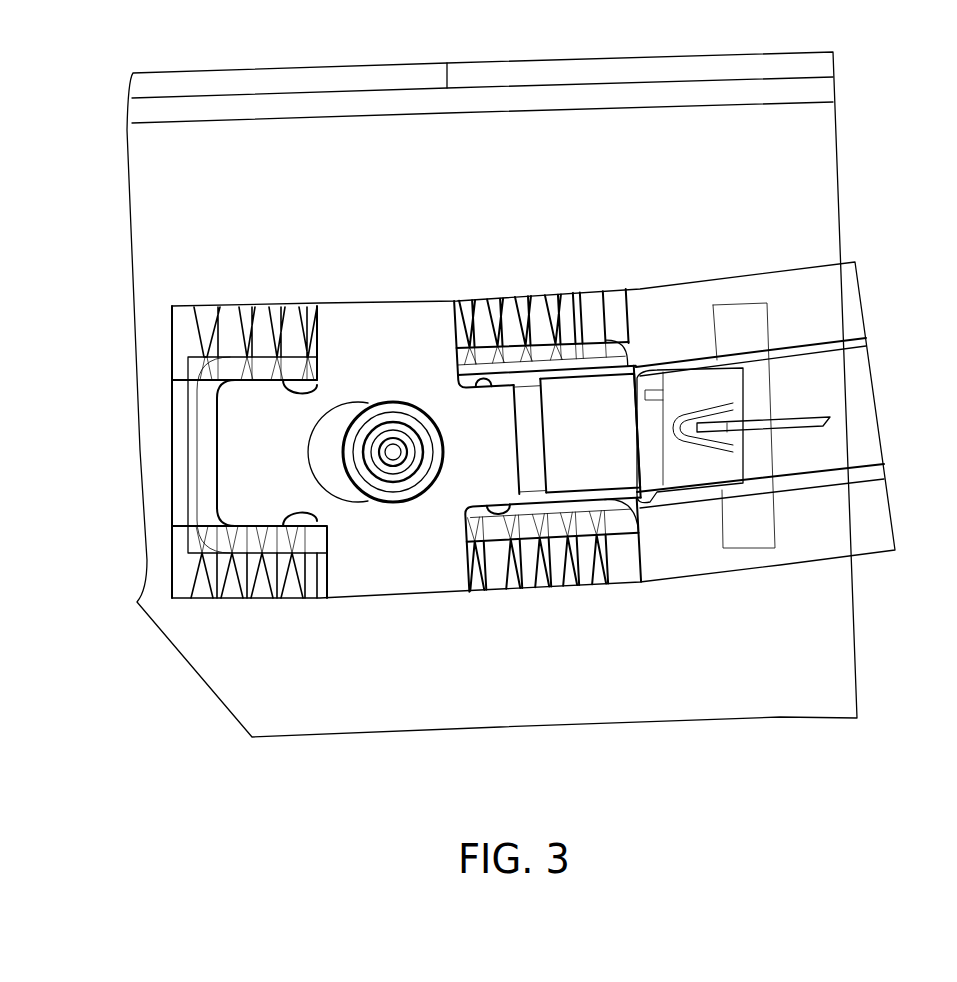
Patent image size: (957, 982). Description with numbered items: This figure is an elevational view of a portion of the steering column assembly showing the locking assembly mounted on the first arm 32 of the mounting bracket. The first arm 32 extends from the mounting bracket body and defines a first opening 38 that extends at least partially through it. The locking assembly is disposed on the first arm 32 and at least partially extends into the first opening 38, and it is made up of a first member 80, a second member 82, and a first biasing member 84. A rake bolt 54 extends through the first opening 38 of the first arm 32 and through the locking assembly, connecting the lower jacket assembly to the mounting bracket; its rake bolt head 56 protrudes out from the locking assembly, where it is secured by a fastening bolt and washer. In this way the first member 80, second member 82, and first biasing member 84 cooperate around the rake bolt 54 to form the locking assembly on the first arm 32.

The first arm 32 is at (822, 142).
The first member 80 is at (338, 282).
The second member 82 is at (151, 352).
The first opening 38 is at (237, 463).
The rake bolt 54 is at (392, 402).
The rake bolt head 56 is at (400, 433).
The first biasing member 84 is at (822, 417).